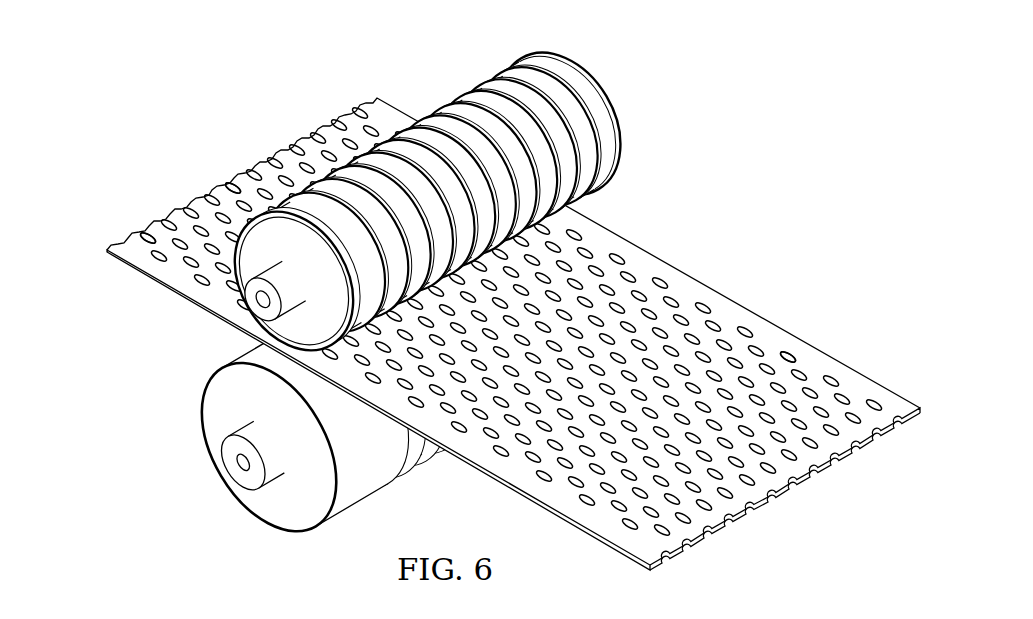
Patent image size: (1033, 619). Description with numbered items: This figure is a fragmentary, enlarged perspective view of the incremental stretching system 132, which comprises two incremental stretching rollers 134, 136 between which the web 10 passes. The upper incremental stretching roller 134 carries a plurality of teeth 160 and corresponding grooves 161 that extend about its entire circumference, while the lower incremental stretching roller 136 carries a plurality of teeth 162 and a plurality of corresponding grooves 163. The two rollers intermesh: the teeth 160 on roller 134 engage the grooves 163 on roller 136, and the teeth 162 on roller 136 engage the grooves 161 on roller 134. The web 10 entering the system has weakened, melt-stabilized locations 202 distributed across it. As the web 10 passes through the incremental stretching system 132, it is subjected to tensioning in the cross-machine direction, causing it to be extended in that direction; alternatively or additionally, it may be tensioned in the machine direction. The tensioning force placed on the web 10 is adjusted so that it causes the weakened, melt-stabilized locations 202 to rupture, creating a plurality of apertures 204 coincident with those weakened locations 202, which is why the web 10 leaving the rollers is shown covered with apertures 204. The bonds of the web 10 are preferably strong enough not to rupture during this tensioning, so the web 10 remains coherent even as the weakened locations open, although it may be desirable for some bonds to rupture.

The web 10 is at (380, 104).
The incremental stretching system 132 is at (427, 194).
The incremental stretching roller 134 is at (247, 258).
The incremental stretching roller 136 is at (210, 410).
The teeth 160 is at (593, 148).
The grooves 161 is at (572, 82).
The teeth 162 is at (386, 463).
The grooves 163 is at (403, 465).
The weakened, melt-stabilized locations 202 is at (236, 183).
The apertures 204 is at (794, 354).